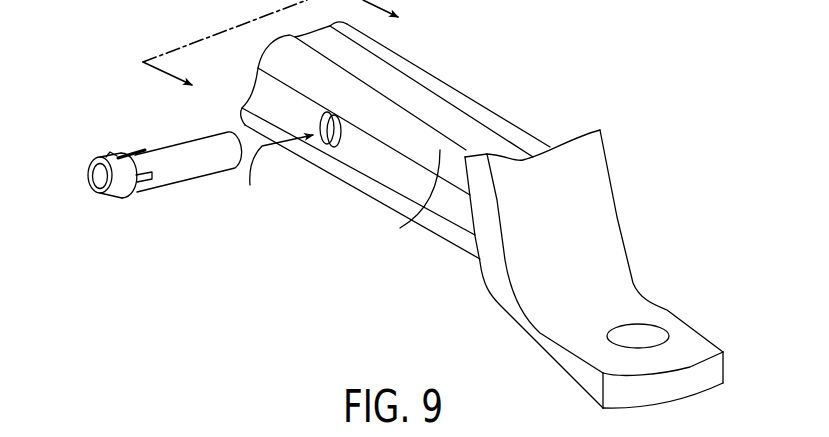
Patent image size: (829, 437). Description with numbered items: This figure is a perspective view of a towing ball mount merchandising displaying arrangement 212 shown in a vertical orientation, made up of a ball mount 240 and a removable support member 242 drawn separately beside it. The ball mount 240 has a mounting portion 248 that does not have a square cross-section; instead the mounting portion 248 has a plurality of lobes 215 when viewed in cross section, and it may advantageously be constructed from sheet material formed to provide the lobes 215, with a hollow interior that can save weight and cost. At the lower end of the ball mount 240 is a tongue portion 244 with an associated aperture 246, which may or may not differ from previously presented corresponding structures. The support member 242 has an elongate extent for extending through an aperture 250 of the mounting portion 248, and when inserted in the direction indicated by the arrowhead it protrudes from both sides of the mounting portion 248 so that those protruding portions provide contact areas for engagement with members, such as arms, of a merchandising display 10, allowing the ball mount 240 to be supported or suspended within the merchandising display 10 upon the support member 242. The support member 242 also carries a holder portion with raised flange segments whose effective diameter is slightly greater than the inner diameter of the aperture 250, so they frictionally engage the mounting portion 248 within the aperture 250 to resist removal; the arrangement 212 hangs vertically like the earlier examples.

The merchandising display 10 is at (284, 56).
The towing ball mount merchandising displaying arrangement 212 is at (118, 37).
The lobes 215 is at (398, 207).
The ball mount 240 is at (482, 215).
The support member 242 is at (157, 140).
The tongue portion 244 is at (604, 190).
The aperture 246 is at (637, 343).
The mounting portion 248 is at (438, 85).
The aperture 250 is at (328, 148).